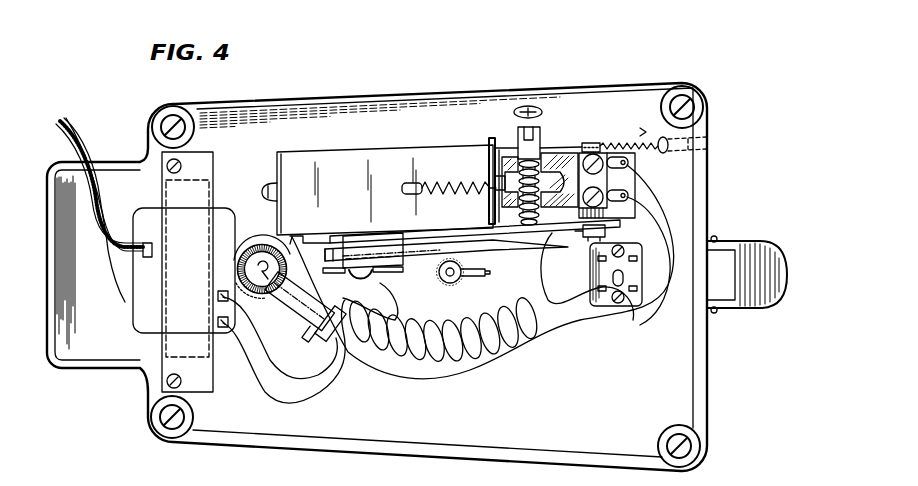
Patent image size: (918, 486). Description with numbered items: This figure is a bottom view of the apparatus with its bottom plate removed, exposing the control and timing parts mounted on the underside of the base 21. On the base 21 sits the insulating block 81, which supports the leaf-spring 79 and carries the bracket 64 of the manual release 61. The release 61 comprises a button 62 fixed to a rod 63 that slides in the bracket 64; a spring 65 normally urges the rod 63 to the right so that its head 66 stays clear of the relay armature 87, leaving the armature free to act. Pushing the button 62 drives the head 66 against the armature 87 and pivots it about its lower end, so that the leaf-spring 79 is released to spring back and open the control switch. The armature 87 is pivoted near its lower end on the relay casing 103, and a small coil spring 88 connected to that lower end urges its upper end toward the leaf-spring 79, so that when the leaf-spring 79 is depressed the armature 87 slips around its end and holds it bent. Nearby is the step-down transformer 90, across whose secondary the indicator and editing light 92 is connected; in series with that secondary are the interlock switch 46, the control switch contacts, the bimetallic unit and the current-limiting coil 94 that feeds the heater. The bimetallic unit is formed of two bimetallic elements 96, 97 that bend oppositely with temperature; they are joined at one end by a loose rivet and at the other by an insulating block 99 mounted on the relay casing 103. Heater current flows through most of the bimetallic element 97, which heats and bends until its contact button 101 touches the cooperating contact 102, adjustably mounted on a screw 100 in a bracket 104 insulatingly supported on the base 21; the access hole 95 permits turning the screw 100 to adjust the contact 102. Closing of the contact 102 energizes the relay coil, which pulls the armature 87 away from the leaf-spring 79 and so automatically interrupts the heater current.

The base 21 is at (707, 392).
The interlock switch 46 is at (636, 301).
The manual release 61 is at (644, 130).
The button 62 is at (707, 137).
The rod 63 is at (558, 147).
The bracket 64 is at (600, 150).
The spring 65 is at (609, 142).
The rod head 66 is at (503, 138).
The leaf-spring 79 is at (563, 156).
The insulating block 81 is at (603, 184).
The relay armature 87 is at (489, 147).
The coil spring 88 is at (440, 183).
The transformer 90 is at (138, 228).
The indicator and editing light 92 is at (257, 260).
The current-limiting coil 94 is at (457, 362).
The access hole 95 is at (524, 106).
The bimetallic element 96 is at (506, 278).
The bimetallic element 97 is at (425, 236).
The insulating block 99 is at (355, 242).
The screw 100 is at (541, 130).
The contact button 101 is at (521, 238).
The cooperating contact 102 is at (490, 232).
The relay casing 103 is at (343, 157).
The bracket 104 is at (537, 230).